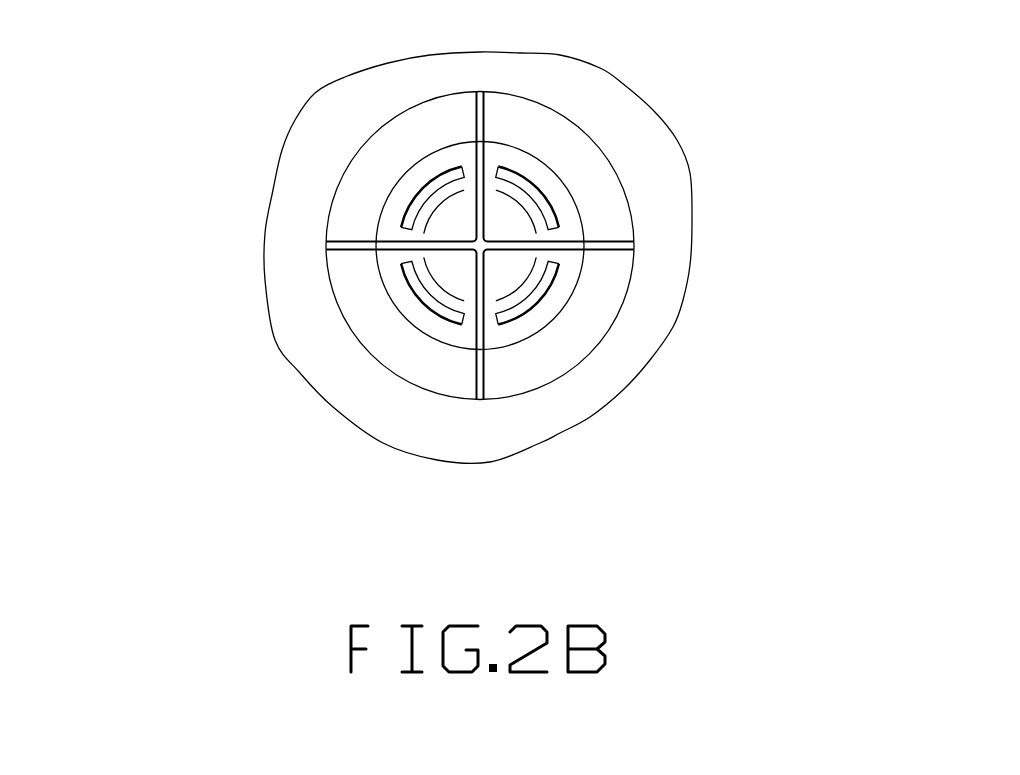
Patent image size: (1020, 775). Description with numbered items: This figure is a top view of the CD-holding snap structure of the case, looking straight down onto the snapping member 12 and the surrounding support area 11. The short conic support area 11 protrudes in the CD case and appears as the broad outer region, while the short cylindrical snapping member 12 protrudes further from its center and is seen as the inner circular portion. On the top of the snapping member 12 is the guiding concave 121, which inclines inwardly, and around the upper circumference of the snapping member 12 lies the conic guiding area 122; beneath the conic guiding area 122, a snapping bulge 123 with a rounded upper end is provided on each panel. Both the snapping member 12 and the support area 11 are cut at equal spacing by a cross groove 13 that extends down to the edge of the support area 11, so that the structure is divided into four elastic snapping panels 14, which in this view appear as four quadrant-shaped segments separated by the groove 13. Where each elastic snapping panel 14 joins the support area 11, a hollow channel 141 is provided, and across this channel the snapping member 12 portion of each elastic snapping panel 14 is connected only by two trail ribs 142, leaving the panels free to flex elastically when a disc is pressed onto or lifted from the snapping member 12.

The short conic support area 11 is at (408, 190).
The short cylindrical snapping member 12 is at (527, 185).
The guiding concave 121 is at (510, 261).
The conic guiding area 122 is at (545, 291).
The snapping bulge 123 is at (473, 327).
The cross groove 13 is at (431, 306).
The elastic snapping panel 14 is at (563, 338).
The hollow channel 141 is at (410, 293).
The trail rib 142 is at (407, 238).